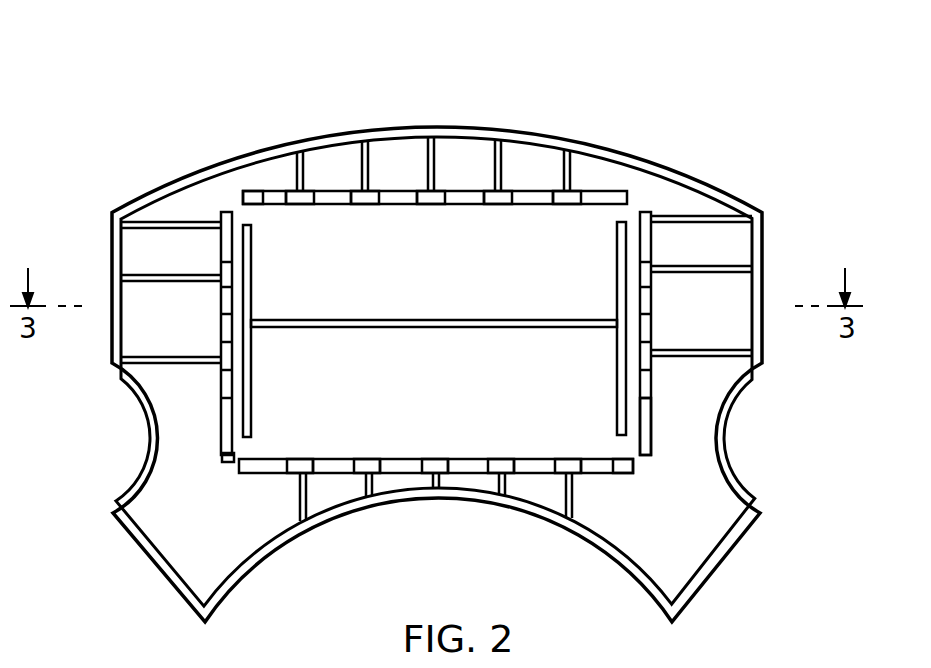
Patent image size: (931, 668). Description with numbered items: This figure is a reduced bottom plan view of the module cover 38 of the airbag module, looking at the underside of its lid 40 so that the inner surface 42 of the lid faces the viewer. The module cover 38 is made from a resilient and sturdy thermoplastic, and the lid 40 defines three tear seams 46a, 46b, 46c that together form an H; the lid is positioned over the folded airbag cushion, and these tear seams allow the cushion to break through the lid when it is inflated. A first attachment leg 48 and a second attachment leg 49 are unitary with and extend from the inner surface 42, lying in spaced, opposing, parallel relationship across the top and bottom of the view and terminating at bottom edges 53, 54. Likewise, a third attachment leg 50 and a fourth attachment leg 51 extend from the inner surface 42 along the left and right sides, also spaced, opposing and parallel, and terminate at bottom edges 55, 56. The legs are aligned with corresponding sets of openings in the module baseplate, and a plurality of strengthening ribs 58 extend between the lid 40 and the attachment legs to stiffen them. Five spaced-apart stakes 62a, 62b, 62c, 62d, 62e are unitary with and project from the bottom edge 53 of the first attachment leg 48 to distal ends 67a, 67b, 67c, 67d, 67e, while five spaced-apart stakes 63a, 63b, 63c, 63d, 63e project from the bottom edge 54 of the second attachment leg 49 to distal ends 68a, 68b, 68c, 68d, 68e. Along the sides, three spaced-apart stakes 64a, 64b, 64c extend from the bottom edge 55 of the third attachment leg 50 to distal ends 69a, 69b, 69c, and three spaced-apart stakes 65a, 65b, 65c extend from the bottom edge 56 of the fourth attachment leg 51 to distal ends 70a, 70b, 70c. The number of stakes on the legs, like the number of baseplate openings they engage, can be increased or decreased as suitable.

The module cover 38 is at (403, 64).
The lid 40 is at (597, 140).
The inner surface 42 is at (677, 198).
The tear seam 46a is at (252, 293).
The tear seam 46b is at (330, 329).
The tear seam 46c is at (616, 327).
The first attachment leg 48 is at (398, 185).
The second attachment leg 49 is at (451, 462).
The third attachment leg 50 is at (181, 370).
The fourth attachment leg 51 is at (676, 348).
The bottom edge 53 is at (240, 200).
The bottom edge 54 is at (626, 473).
The bottom edge 55 is at (229, 462).
The bottom edge 56 is at (648, 433).
The strengthening ribs 58 is at (438, 157).
The stake 62a is at (314, 205).
The stake 62b is at (379, 205).
The stake 62c is at (445, 205).
The stake 62d is at (512, 205).
The stake 62e is at (581, 205).
The stake 63a is at (297, 458).
The stake 63b is at (364, 458).
The stake 63c is at (432, 458).
The stake 63d is at (498, 458).
The stake 63e is at (565, 458).
The stake 64a is at (226, 265).
The stake 64b is at (226, 316).
The stake 64c is at (226, 380).
The stake 65a is at (648, 264).
The stake 65b is at (648, 315).
The stake 65c is at (648, 369).
The distal end 67a is at (288, 205).
The distal end 67b is at (354, 205).
The distal end 67c is at (420, 205).
The distal end 67d is at (486, 205).
The distal end 67e is at (553, 205).
The distal end 68a is at (304, 459).
The distal end 68b is at (371, 459).
The distal end 68c is at (439, 459).
The distal end 68d is at (505, 459).
The distal end 68e is at (572, 459).
The distal end 69a is at (226, 287).
The distal end 69b is at (226, 341).
The distal end 69c is at (226, 398).
The distal end 70a is at (648, 287).
The distal end 70b is at (648, 340).
The distal end 70c is at (648, 394).